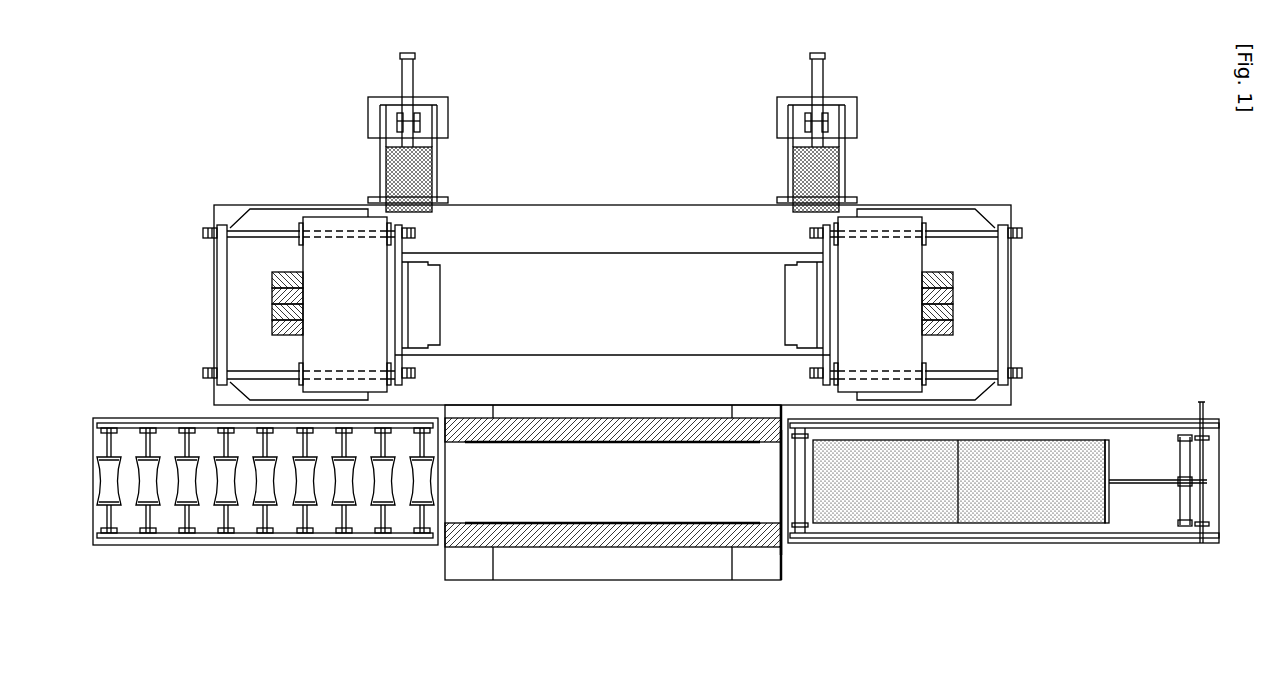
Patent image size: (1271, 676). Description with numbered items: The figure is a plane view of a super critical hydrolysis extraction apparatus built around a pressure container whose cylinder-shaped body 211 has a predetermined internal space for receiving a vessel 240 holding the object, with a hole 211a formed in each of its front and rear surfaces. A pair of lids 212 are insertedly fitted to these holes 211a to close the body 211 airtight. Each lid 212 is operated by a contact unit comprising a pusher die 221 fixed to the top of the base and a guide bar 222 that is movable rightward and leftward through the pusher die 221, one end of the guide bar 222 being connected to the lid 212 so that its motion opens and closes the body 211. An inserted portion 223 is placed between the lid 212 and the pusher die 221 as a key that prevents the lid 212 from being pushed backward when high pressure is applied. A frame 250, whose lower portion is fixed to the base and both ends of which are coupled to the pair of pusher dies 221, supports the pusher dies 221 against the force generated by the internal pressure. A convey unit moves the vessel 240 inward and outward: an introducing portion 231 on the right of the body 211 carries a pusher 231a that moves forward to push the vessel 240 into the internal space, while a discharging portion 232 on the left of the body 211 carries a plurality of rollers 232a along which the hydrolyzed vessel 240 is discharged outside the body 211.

The body 211 is at (703, 537).
The hole 211a is at (770, 478).
The lid 212 is at (423, 280).
The pusher die 221 is at (340, 250).
The guide bar 222 is at (253, 238).
The inserted portion 223 is at (397, 180).
The introducing portion 231 is at (1039, 538).
The pusher 231a is at (1140, 485).
The discharging portion 232 is at (282, 537).
The roller 232a is at (370, 493).
The vessel 240 is at (895, 510).
The frame 250 is at (945, 275).